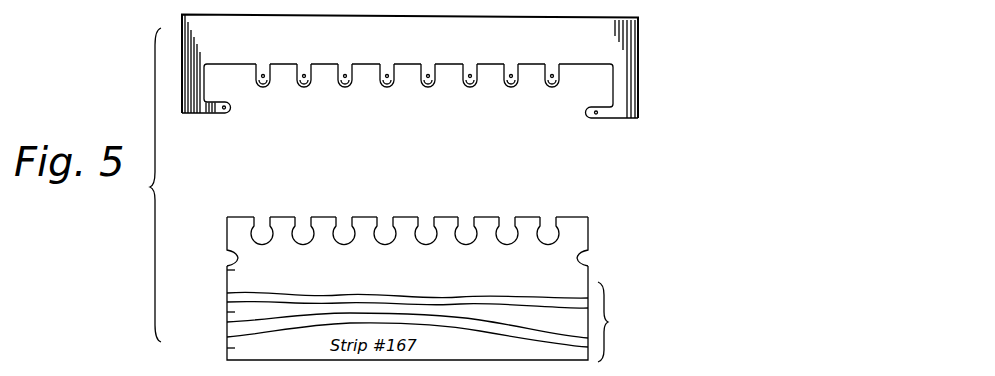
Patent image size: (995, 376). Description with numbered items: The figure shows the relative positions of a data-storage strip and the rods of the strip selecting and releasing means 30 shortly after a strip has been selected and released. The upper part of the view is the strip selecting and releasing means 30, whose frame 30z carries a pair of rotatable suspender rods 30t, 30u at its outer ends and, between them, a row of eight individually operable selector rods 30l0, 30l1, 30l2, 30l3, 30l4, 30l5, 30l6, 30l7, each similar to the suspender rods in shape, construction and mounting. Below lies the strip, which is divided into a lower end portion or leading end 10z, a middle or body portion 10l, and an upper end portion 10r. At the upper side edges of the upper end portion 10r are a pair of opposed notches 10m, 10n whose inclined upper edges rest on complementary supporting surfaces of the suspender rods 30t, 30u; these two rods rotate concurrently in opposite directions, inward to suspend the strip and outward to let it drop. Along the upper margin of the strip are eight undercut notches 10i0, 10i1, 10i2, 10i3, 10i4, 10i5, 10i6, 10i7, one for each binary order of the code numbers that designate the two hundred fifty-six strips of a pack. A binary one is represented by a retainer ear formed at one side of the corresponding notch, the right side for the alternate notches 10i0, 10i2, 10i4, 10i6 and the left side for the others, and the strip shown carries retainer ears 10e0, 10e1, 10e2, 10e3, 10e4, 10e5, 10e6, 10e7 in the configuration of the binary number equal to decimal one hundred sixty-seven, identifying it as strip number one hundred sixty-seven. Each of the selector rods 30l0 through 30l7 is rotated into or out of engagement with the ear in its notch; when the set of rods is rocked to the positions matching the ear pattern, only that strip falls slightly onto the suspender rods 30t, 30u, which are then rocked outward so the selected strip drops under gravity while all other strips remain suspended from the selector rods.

The strip selecting and releasing means 30 is at (645, 15).
The frame 30z is at (617, 40).
The suspender rod 30t is at (221, 114).
The suspender rod 30u is at (594, 118).
The selector rod 30l0 is at (552, 90).
The selector rod 30l1 is at (512, 89).
The selector rod 30l2 is at (470, 90).
The selector rod 30l3 is at (428, 89).
The selector rod 30l4 is at (388, 90).
The selector rod 30l5 is at (346, 89).
The selector rod 30l6 is at (306, 89).
The selector rod 30l7 is at (264, 89).
The supporting notch 10m is at (230, 248).
The supporting notch 10n is at (590, 263).
The upper end portion 10r is at (228, 272).
The middle or body portion 10l is at (230, 313).
The lower end portion 10z is at (232, 347).
The upper-margin notch 10i0 is at (545, 230).
The upper-margin notch 10i1 is at (505, 232).
The upper-margin notch 10i2 is at (465, 228).
The upper-margin notch 10i3 is at (423, 230).
The upper-margin notch 10i4 is at (385, 227).
The upper-margin notch 10i5 is at (345, 230).
The upper-margin notch 10i6 is at (302, 227).
The upper-margin notch 10i7 is at (259, 228).
The retainer ear 10e0 is at (568, 242).
The retainer ear 10e1 is at (490, 243).
The retainer ear 10e2 is at (485, 242).
The retainer ear 10e3 is at (450, 256).
The retainer ear 10e4 is at (380, 244).
The retainer ear 10e5 is at (336, 240).
The retainer ear 10e6 is at (297, 243).
The retainer ear 10e7 is at (250, 242).